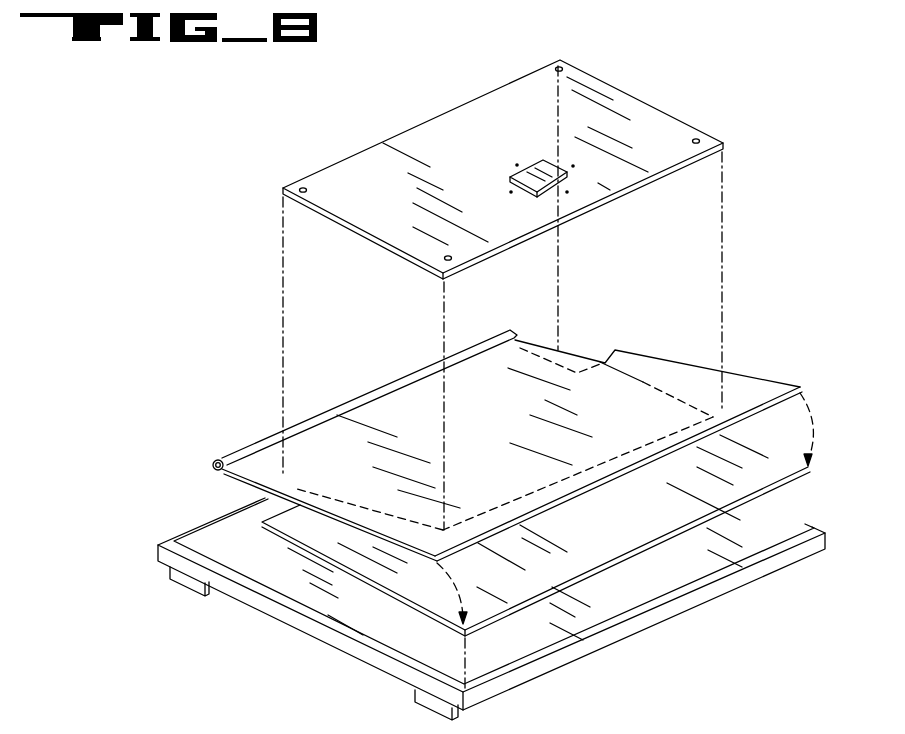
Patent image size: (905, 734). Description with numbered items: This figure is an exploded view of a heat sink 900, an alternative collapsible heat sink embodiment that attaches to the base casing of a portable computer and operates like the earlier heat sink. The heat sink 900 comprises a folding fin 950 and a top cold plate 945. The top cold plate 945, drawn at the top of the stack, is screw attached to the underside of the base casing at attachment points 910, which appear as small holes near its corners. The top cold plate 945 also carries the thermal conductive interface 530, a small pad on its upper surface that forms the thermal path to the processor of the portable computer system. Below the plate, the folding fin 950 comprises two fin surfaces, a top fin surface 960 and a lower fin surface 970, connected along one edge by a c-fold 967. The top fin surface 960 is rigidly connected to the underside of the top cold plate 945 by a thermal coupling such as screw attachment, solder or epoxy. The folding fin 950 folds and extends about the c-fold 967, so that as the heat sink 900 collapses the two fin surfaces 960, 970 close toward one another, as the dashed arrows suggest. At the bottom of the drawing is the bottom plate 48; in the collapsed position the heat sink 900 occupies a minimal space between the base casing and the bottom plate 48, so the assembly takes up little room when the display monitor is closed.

The heat sink 900 is at (393, 82).
The attachment points 910 is at (305, 186).
The top cold plate 945 is at (500, 144).
The thermal conductive interface 530 is at (551, 168).
The folding fin 950 is at (570, 360).
The top fin surface 960 is at (512, 434).
The c-fold 967 is at (214, 460).
The fin surface 970 is at (606, 531).
The bottom plate 48 is at (631, 632).